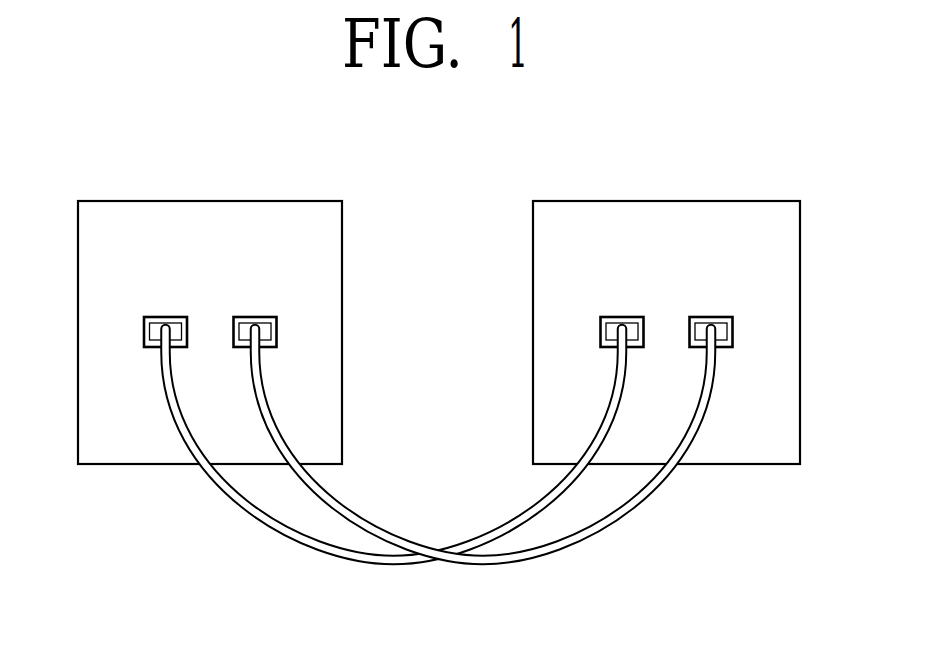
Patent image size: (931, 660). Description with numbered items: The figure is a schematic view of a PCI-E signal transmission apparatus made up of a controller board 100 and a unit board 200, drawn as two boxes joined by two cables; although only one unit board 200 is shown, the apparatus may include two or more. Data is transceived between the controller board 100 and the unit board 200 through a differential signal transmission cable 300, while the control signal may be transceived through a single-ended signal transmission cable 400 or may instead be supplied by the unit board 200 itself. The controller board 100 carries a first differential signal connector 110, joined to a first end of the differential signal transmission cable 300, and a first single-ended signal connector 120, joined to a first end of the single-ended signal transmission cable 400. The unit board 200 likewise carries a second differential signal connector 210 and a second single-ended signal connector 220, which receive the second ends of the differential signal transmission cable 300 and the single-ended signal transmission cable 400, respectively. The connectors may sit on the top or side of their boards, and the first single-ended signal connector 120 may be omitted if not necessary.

The controller board 100 is at (128, 201).
The first differential signal connector 110 is at (144, 347).
The first single-ended signal connector 120 is at (234, 317).
The unit board 200 is at (752, 201).
The second differential signal connector 210 is at (644, 317).
The second single-ended signal connector 220 is at (732, 347).
The differential signal transmission cable 300 is at (274, 529).
The single-ended signal transmission cable 400 is at (607, 531).